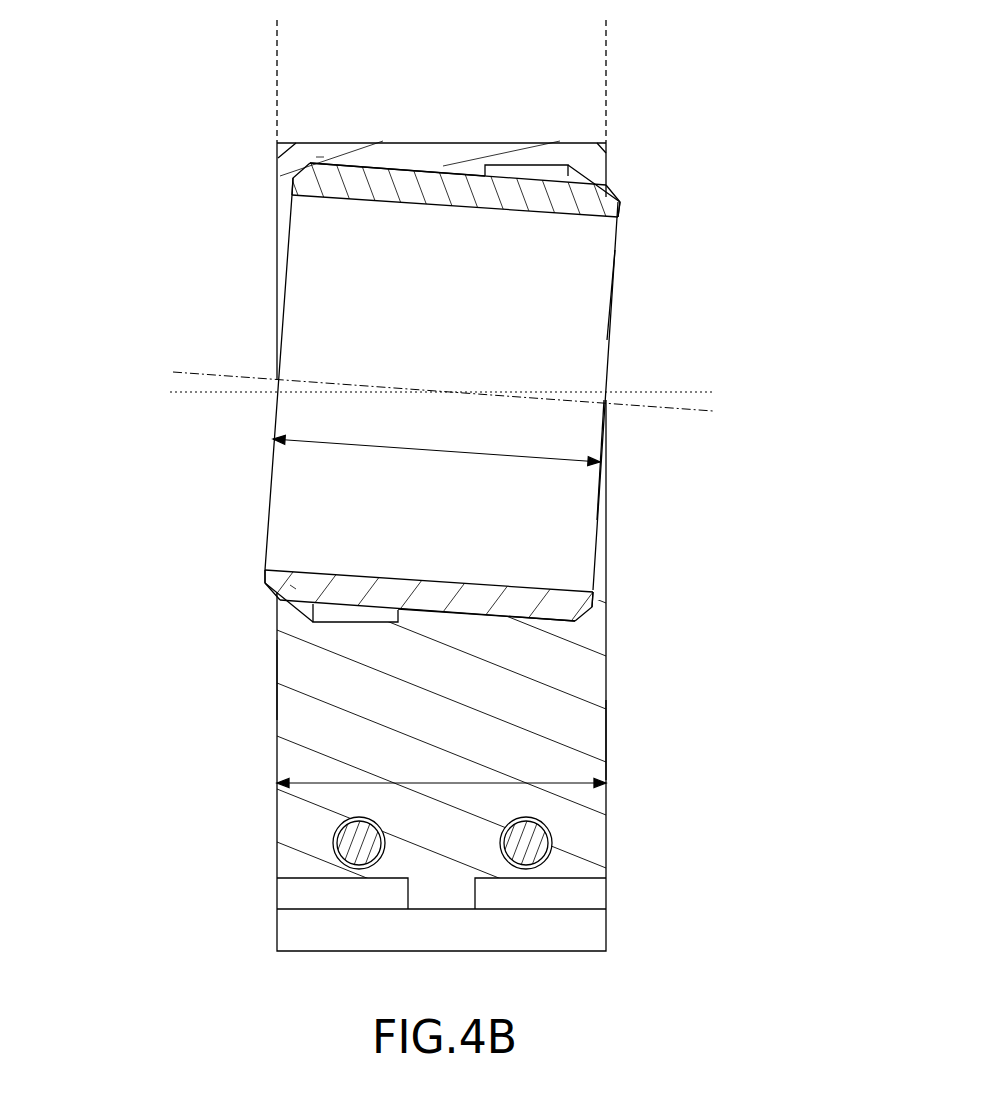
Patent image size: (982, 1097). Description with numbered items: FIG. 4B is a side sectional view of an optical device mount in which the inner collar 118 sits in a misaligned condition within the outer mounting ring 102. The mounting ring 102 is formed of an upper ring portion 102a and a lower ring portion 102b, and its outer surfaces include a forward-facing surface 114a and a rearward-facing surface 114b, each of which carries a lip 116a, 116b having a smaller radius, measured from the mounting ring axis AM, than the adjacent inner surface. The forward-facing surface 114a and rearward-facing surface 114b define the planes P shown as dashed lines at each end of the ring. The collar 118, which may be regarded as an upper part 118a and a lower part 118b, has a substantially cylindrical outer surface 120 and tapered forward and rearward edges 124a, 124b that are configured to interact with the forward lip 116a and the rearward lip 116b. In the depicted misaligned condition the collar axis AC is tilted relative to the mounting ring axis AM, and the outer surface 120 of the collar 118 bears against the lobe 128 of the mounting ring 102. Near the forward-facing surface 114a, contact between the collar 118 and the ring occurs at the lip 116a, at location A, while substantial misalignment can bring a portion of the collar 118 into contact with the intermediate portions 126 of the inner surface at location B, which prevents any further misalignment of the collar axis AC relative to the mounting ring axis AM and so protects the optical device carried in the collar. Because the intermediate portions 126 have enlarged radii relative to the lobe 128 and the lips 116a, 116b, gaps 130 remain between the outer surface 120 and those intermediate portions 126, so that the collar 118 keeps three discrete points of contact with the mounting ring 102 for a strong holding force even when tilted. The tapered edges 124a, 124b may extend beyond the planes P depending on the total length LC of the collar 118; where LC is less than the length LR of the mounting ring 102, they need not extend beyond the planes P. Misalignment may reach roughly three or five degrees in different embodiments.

The outer mounting ring 102 is at (545, 153).
The upper ring portion 102a is at (398, 150).
The lower ring portion 102b is at (593, 690).
The forward-facing surface 114a is at (270, 706).
The rearward-facing surface 114b is at (617, 743).
The forward lip 116a is at (283, 175).
The rearward lip 116b is at (597, 172).
The inner collar 118 is at (595, 343).
The upper part 118a is at (593, 293).
The lower part 118b is at (587, 440).
The outer surface 120 is at (506, 161).
The tapered forward edge 124a is at (296, 161).
The tapered rearward edge 124b is at (629, 192).
The intermediate portions 126 is at (353, 148).
The lobe 128 is at (437, 167).
The gaps 130 is at (569, 151).
The planes P is at (277, 35).
The location A is at (298, 580).
The location B is at (320, 144).
The collar axis AC is at (441, 391).
The mounting ring axis AM is at (439, 391).
The total length of the collar LC is at (413, 450).
The length of the mounting ring LR is at (437, 790).